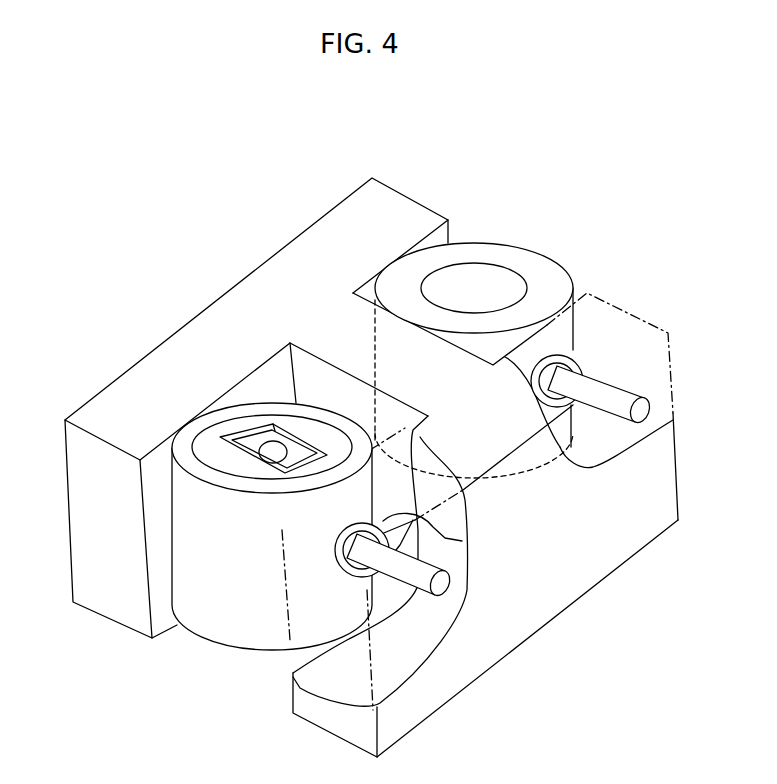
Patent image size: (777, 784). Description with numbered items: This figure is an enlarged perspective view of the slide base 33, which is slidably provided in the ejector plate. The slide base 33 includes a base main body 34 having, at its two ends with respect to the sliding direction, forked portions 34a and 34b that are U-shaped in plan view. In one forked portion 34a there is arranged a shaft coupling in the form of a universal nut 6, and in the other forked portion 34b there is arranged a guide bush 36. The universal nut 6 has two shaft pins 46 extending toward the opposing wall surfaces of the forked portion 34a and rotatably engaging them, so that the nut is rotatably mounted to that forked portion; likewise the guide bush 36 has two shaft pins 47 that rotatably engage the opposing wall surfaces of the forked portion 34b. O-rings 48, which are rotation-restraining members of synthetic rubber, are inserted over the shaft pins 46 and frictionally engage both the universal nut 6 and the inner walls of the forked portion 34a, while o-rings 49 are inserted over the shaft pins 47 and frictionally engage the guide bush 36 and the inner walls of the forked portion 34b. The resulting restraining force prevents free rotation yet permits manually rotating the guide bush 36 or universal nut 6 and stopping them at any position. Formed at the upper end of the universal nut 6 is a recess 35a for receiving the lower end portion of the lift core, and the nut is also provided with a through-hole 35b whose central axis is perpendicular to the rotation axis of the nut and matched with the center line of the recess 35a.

The slide base 33 is at (157, 300).
The base main body 34 is at (308, 298).
The forked portion 34a is at (160, 577).
The forked portion 34b is at (481, 210).
The shaft coupling (universal nut) 6 is at (243, 612).
The recess 35a is at (233, 441).
The through-hole 35b is at (257, 440).
The guide bush 36 is at (527, 266).
The shaft pins 46 is at (470, 580).
The shaft pins 47 is at (622, 387).
The o-rings (rotation-restraining members) 48 is at (462, 541).
The o-rings (rotation-restraining members) 49 is at (578, 357).